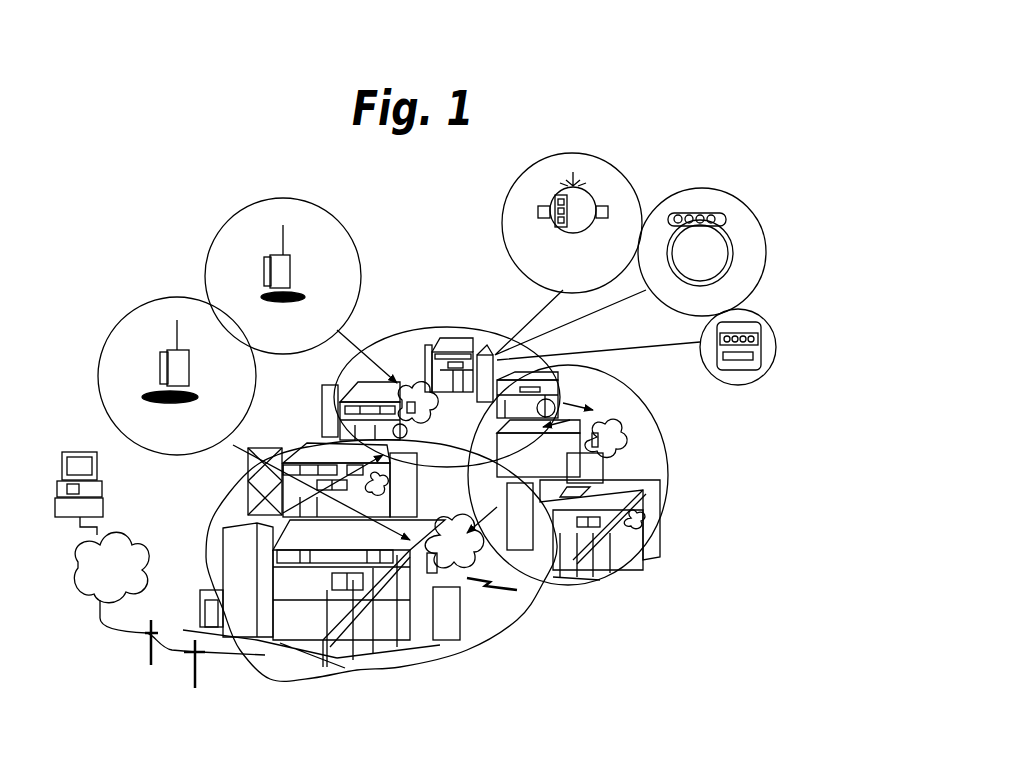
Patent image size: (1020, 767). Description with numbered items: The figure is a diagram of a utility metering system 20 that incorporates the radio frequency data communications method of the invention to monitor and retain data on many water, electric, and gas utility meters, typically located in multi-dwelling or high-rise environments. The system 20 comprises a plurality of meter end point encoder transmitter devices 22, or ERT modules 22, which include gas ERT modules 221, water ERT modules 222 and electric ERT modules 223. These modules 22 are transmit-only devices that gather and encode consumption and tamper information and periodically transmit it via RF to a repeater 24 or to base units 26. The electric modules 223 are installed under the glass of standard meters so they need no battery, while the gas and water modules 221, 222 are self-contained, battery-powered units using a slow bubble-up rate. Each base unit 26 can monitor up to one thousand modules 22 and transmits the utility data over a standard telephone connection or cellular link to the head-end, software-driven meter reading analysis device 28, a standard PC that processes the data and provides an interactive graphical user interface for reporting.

The utility metering system 20 is at (394, 262).
The meter end point encoder transmitter device 22 is at (893, 322).
The repeater 24 is at (220, 226).
The base unit 26 is at (99, 360).
The meter reading analysis device 28 is at (62, 463).
The gas ERT module 221 is at (732, 193).
The water ERT module 222 is at (620, 160).
The electric ERT module 223 is at (768, 322).